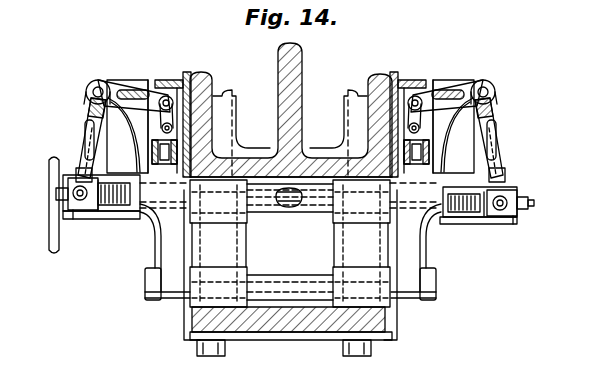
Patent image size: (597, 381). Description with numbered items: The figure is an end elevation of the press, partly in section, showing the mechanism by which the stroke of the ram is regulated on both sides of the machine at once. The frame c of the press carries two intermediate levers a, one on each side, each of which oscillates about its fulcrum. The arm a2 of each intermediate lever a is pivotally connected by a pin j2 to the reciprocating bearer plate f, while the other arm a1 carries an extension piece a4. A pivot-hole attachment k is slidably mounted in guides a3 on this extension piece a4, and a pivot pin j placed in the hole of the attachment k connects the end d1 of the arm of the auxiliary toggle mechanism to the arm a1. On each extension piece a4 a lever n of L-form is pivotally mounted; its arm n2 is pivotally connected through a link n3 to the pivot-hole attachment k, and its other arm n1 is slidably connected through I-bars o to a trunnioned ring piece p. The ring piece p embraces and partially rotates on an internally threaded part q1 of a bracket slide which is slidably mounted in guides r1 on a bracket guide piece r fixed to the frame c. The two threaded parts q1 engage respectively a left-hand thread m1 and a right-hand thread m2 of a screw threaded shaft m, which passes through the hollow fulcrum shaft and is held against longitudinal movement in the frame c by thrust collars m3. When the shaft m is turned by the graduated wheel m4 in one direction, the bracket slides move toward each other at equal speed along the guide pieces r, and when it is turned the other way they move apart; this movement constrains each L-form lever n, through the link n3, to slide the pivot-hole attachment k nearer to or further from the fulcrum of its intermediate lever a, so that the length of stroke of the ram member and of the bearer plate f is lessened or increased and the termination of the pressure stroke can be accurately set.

The intermediate lever a is at (238, 122).
The arm of intermediate lever a1 is at (165, 80).
The arm of intermediate lever a2 is at (170, 250).
The guides a3 is at (150, 80).
The extension piece a4 is at (133, 82).
The frame c is at (299, 62).
The end of arm of auxiliary toggle-mechanism d1 is at (179, 140).
The reciprocating bearer plate f is at (270, 213).
The pivot pin j is at (157, 157).
The pin j2 is at (147, 288).
The pivot-hole attachment k is at (157, 151).
The screw threaded shaft m is at (287, 213).
The left-hand thread m1 is at (523, 210).
The right-hand thread m2 is at (112, 215).
The thrust collars m3 is at (118, 204).
The wheel m4 is at (55, 223).
The lever of L-form n is at (97, 82).
The arm of L-form lever n1 is at (90, 110).
The arm of L-form lever n2 is at (110, 78).
The link n3 is at (153, 82).
The I-bars o is at (75, 222).
The trunnioned ring piece p is at (83, 217).
The internally threaded part q1 is at (72, 182).
The bracket guide piece r is at (102, 215).
The guides r1 is at (482, 220).